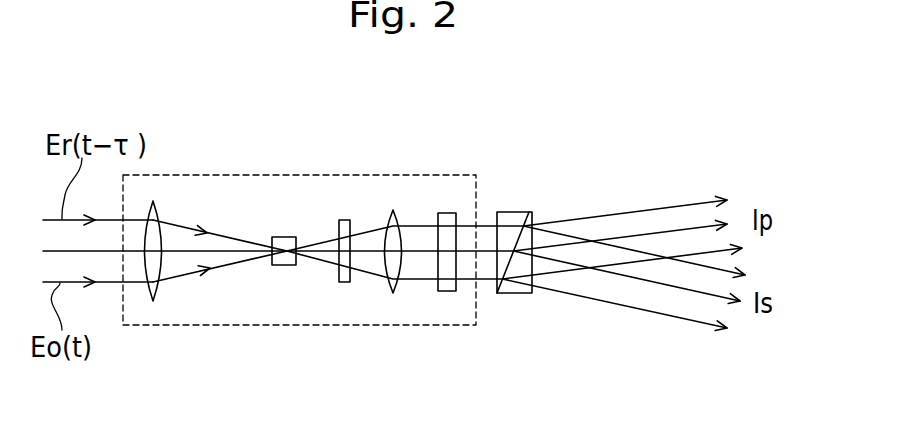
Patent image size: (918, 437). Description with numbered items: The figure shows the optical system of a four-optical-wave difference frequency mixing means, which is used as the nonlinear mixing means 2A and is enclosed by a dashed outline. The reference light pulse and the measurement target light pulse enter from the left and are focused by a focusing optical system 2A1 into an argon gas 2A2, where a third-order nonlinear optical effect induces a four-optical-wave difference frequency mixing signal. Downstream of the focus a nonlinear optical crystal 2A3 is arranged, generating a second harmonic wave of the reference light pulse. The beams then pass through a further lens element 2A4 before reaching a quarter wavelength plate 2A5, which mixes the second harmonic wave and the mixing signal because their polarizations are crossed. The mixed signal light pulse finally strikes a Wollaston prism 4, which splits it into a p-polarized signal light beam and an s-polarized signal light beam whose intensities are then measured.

The nonlinear mixing means 2A is at (293, 175).
The focusing optical system 2A1 is at (153, 300).
The argon gas 2A2 is at (283, 265).
The nonlinear optical crystal 2A3 is at (344, 283).
The second lens 2A4 is at (394, 210).
The ¼ wavelength plate 2A5 is at (447, 292).
The Wollaston prism 4 is at (513, 212).